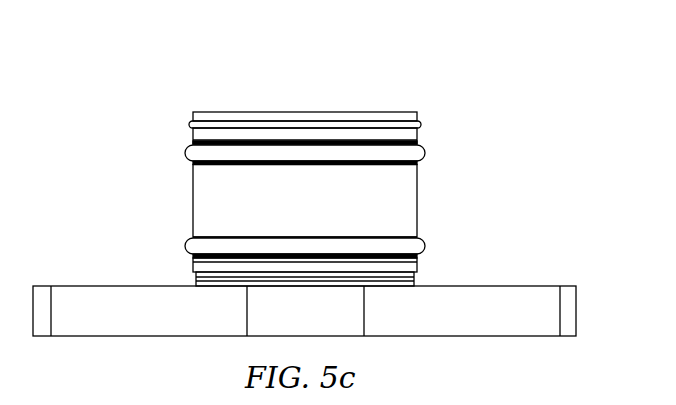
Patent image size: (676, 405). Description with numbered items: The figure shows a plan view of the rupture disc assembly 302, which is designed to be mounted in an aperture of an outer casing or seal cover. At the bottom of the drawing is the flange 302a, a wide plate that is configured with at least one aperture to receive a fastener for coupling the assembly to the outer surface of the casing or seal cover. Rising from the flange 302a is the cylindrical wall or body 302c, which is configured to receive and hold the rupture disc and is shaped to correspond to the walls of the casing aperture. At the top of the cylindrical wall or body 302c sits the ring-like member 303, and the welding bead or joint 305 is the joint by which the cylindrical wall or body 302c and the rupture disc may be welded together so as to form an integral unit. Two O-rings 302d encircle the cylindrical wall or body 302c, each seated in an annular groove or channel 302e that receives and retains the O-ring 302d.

The rupture disc assembly 302 is at (307, 152).
The flange 302a is at (492, 297).
The cylindrical wall or body 302c is at (402, 193).
The O-ring 302d is at (427, 150).
The annular groove or channel 302e is at (227, 233).
The ring-like member 303 is at (409, 112).
The welding bead or joint 305 is at (190, 124).